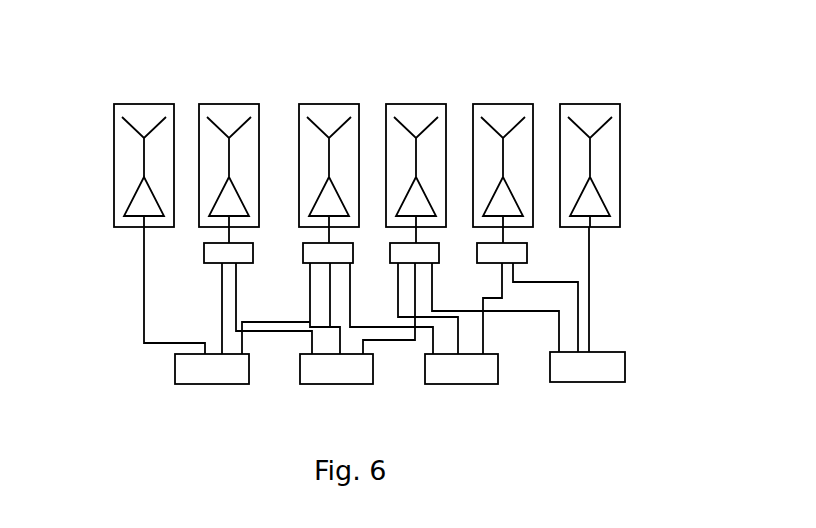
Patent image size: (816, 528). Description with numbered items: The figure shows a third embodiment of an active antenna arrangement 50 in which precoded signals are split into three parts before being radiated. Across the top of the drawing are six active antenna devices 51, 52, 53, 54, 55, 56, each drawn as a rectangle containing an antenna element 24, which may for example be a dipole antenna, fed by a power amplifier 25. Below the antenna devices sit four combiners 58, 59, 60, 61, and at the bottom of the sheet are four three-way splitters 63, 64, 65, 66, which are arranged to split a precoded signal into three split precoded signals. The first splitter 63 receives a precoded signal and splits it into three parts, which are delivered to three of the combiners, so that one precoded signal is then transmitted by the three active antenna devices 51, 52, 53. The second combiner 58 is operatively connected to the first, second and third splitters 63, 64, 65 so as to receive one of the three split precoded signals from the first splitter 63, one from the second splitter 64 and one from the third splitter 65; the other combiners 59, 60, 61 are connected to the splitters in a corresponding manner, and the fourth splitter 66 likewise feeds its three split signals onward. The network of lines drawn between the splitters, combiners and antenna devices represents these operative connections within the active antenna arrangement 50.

The active antenna arrangement 50 is at (676, 61).
The antenna element 24 is at (123, 121).
The power amplifier 25 is at (139, 198).
The active antenna device 51 is at (119, 159).
The active antenna device 52 is at (213, 110).
The active antenna device 53 is at (345, 110).
The active antenna device 54 is at (428, 110).
The active antenna device 55 is at (515, 110).
The active antenna device 56 is at (598, 110).
The combiner 58 is at (253, 255).
The combiner 59 is at (353, 255).
The combiner 60 is at (439, 255).
The combiner 61 is at (527, 255).
The three-way splitter 63 is at (177, 377).
The three-way splitter 64 is at (301, 377).
The three-way splitter 65 is at (426, 377).
The three-way splitter 66 is at (552, 374).